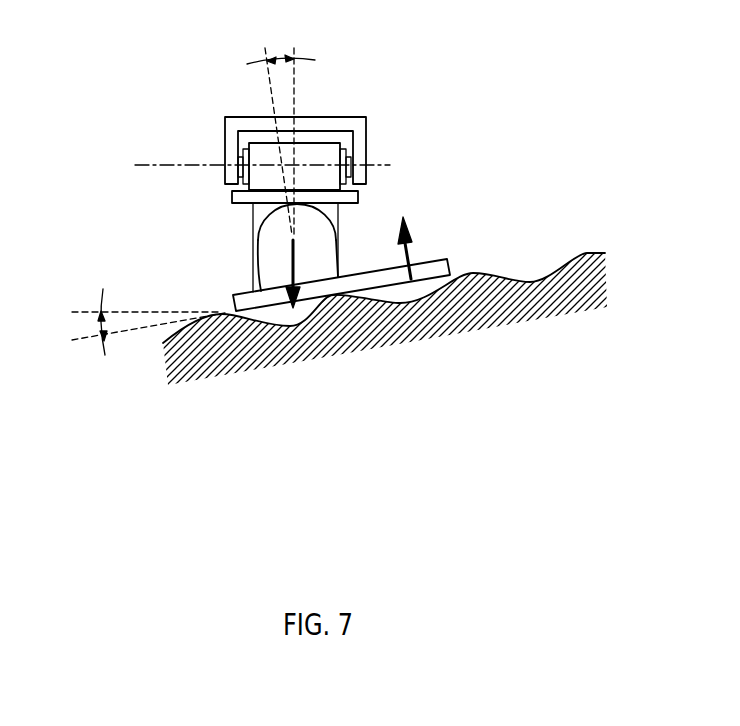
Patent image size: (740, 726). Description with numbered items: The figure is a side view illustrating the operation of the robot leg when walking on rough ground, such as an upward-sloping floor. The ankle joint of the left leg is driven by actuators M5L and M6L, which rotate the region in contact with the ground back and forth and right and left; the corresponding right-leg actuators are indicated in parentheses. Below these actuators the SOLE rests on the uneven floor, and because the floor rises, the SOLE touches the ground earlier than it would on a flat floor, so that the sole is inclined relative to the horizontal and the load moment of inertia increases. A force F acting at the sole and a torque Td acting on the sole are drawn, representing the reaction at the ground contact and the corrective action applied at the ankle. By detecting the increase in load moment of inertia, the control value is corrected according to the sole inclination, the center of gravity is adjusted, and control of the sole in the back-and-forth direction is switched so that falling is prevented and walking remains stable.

The actuator M5L is at (323, 147).
The actuator M6L is at (267, 253).
The floor reaction force F is at (295, 248).
The compliance torque Td is at (413, 242).
The sole SOLE is at (335, 293).